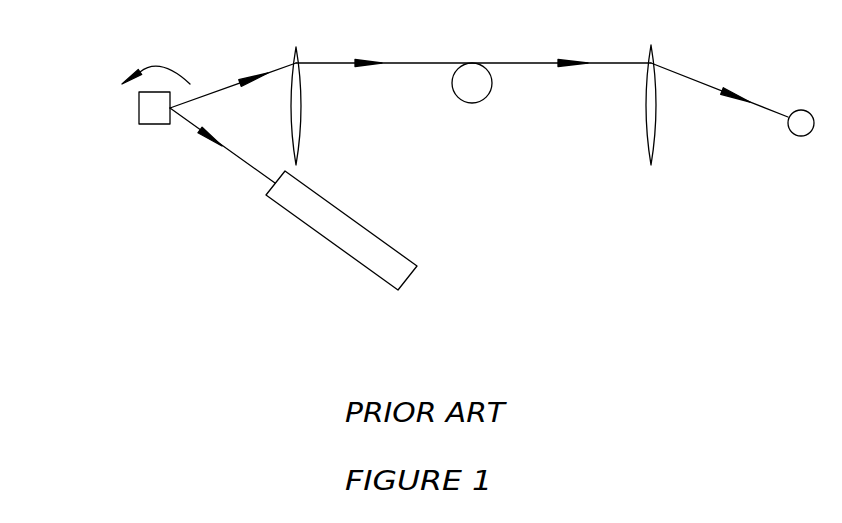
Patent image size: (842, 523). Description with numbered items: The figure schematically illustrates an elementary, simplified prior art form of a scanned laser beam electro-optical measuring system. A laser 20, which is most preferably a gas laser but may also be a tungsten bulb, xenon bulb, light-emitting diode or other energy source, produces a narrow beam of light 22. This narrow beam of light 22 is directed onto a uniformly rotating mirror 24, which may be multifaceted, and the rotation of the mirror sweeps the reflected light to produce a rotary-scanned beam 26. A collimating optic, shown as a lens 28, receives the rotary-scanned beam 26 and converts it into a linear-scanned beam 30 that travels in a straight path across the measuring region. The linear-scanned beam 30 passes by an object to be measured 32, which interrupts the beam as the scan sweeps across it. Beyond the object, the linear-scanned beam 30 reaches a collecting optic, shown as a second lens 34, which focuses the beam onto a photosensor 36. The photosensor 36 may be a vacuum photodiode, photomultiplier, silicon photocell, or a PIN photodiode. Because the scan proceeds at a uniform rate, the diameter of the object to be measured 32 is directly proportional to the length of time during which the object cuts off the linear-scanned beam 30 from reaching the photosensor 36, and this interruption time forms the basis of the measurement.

The laser 20 is at (322, 250).
The narrow beam of light 22 is at (236, 173).
The uniformly rotating mirror 24 is at (128, 135).
The rotary-scanned beam 26 is at (208, 75).
The lens 28 is at (312, 37).
The linear-scanned beam 30 is at (413, 49).
The object to be measured 32 is at (496, 106).
The lens 34 is at (666, 32).
The photosensor 36 is at (787, 145).